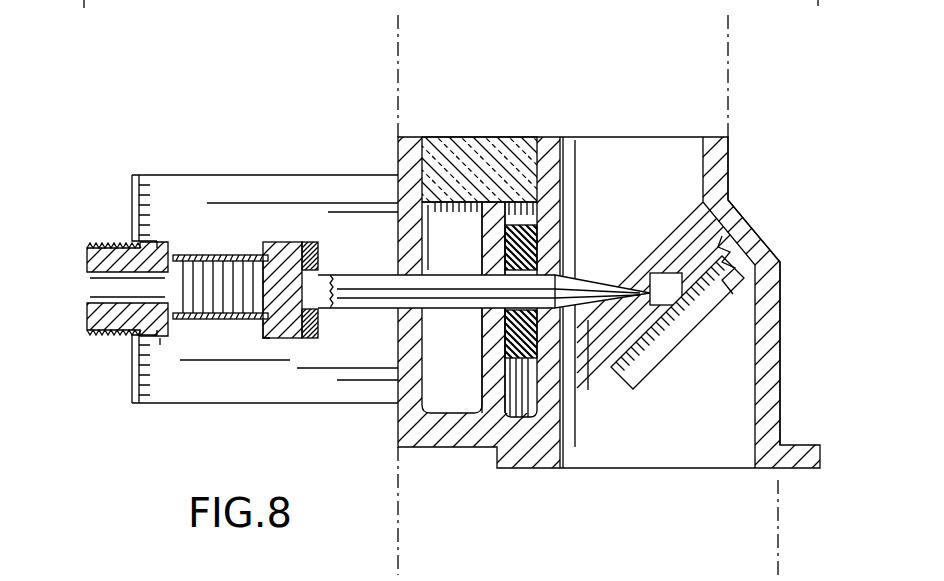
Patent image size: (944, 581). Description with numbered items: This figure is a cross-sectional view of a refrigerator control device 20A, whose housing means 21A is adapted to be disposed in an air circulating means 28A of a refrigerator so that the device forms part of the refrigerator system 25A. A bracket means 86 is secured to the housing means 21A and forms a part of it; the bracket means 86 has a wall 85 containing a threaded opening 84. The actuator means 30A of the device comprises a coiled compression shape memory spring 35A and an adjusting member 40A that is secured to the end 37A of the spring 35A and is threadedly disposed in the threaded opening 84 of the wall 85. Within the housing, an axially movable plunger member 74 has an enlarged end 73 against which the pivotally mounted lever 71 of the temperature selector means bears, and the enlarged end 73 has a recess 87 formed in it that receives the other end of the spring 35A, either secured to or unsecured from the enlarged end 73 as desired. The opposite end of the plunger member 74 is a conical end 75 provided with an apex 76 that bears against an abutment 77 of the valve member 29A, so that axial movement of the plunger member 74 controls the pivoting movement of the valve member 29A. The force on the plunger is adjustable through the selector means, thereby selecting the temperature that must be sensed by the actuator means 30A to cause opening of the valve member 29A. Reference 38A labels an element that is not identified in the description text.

The refrigerator control device 20A is at (776, 215).
The housing means 21A is at (397, 428).
The refrigerator system 25A is at (735, 67).
The air circulating means 28A is at (397, 538).
The valve member 29A is at (643, 338).
The actuator means 30A is at (257, 262).
The coiled compression shape memory spring 35A is at (215, 325).
The end of the spring 37A is at (172, 338).
The screw head 38A is at (264, 242).
The adjusting member 40A is at (186, 230).
The lever 71 is at (322, 252).
The enlarged end 73 is at (286, 242).
The plunger member 74 is at (462, 313).
The conical end 75 is at (596, 277).
The apex 76 is at (688, 300).
The abutment 77 is at (652, 270).
The threaded opening 84 is at (92, 289).
The wall 85 is at (132, 197).
The bracket means 86 is at (163, 175).
The recess 87 is at (262, 320).